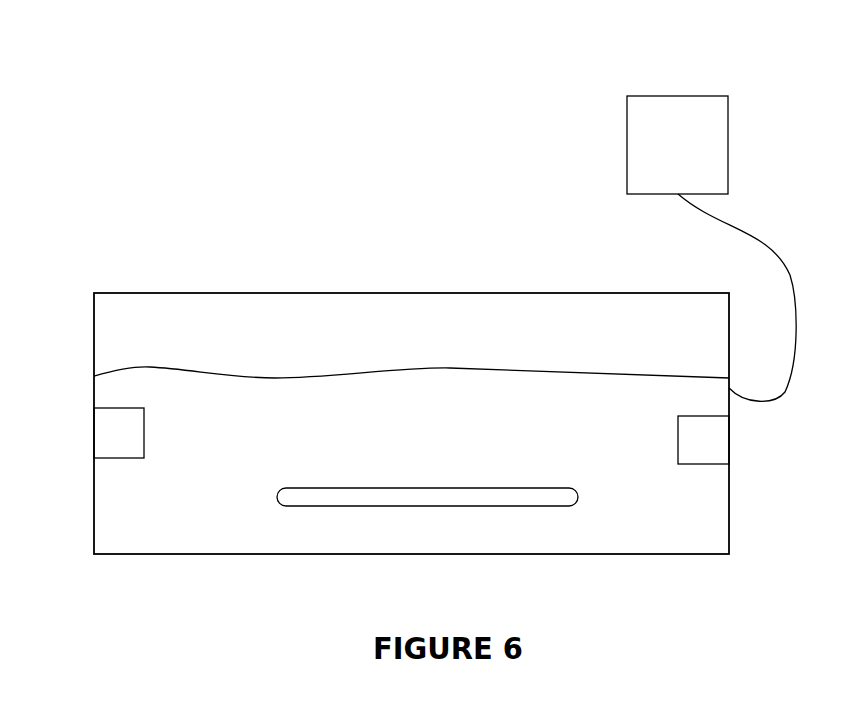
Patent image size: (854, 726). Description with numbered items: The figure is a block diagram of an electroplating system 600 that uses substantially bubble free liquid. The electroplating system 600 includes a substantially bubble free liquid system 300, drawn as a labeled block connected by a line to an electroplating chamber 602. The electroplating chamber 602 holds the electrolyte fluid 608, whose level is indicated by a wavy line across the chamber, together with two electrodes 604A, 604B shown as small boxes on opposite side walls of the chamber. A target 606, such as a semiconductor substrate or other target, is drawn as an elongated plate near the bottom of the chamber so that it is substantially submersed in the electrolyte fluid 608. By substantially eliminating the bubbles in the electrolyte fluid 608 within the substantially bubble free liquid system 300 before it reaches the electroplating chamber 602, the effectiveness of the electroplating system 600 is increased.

The electroplating system 600 is at (245, 60).
The electroplating chamber 602 is at (411, 293).
The substantially bubble free liquid system 300 is at (627, 145).
The electrode 604A is at (729, 441).
The electrode 604B is at (94, 432).
The target 606 is at (427, 506).
The electrolyte fluid 608 is at (195, 522).